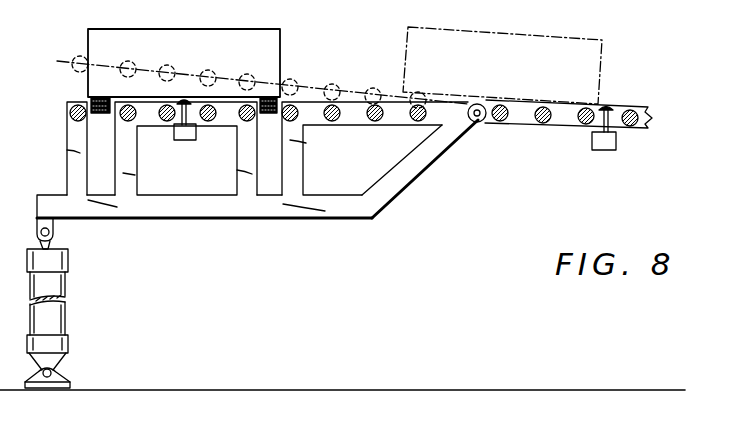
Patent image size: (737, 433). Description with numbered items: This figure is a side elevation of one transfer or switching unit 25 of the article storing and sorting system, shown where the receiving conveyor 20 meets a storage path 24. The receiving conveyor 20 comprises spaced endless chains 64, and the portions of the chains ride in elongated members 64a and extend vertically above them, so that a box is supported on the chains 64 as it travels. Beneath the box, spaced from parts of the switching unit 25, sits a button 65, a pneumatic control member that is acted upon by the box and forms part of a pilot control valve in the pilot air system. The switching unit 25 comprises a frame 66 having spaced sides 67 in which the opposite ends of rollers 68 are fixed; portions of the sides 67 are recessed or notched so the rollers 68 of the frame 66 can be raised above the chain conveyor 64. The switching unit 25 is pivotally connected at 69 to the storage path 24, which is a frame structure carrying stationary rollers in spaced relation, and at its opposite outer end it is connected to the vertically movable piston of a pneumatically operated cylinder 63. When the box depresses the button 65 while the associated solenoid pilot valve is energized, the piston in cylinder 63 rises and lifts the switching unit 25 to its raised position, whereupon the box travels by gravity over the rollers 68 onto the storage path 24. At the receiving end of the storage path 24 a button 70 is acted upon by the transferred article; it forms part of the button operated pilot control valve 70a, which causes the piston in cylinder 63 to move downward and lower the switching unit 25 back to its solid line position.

The receiving conveyor 20 is at (70, 100).
The storage path 24 is at (568, 120).
The transfer or switching unit 25 is at (398, 186).
The cylinder 63 is at (53, 322).
The endless chain 64 is at (102, 114).
The elongated member 64a is at (269, 114).
The button 65 is at (192, 115).
The frame 66 is at (249, 221).
The spaced sides 67 is at (237, 184).
The rollers 68 is at (165, 122).
The pivotal connection 69 is at (480, 122).
The button 70 is at (610, 109).
The button operated pilot control valve 70a is at (600, 152).